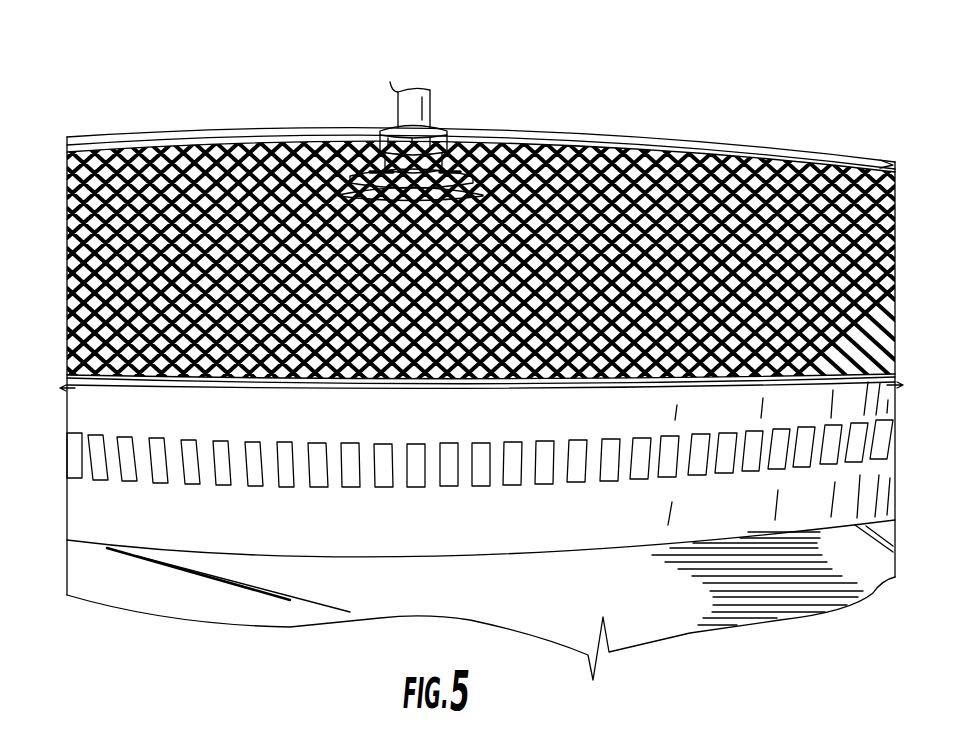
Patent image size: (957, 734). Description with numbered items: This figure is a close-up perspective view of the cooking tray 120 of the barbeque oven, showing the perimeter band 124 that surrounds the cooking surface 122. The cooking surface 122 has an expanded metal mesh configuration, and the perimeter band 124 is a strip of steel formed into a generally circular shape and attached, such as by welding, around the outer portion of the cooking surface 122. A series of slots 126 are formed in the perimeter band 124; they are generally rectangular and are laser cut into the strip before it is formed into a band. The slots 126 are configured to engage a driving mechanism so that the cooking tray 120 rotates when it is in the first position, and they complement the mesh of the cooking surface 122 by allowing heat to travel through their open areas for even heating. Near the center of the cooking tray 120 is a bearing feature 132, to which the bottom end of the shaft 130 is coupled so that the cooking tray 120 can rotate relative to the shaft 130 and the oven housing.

The cooking tray 120 is at (692, 108).
The cooking surface 122 is at (172, 228).
The perimeter band 124 is at (95, 512).
The slots 126 is at (316, 470).
The shaft 130 is at (418, 108).
The bearing feature 132 is at (453, 152).